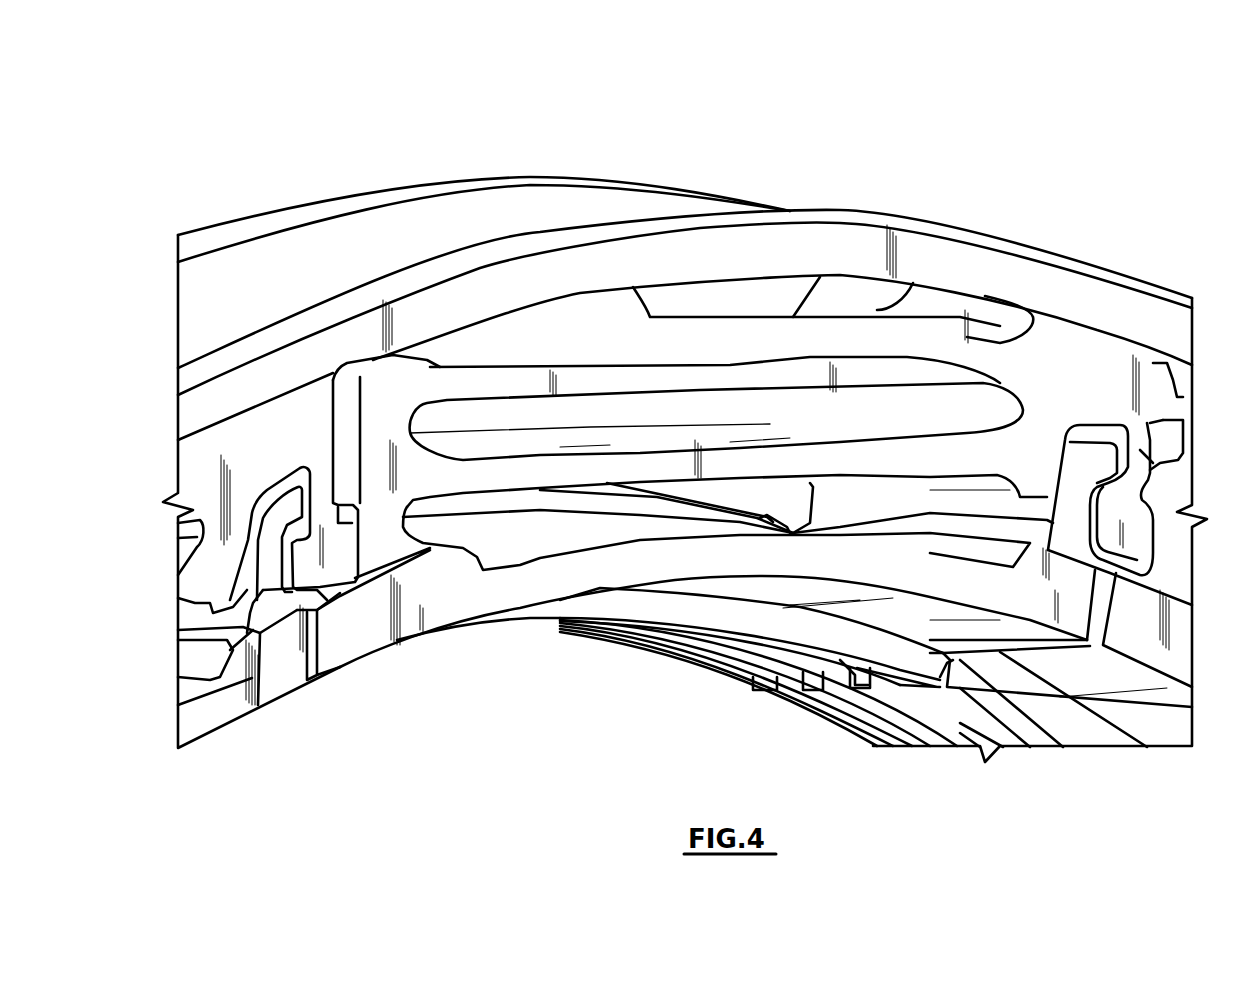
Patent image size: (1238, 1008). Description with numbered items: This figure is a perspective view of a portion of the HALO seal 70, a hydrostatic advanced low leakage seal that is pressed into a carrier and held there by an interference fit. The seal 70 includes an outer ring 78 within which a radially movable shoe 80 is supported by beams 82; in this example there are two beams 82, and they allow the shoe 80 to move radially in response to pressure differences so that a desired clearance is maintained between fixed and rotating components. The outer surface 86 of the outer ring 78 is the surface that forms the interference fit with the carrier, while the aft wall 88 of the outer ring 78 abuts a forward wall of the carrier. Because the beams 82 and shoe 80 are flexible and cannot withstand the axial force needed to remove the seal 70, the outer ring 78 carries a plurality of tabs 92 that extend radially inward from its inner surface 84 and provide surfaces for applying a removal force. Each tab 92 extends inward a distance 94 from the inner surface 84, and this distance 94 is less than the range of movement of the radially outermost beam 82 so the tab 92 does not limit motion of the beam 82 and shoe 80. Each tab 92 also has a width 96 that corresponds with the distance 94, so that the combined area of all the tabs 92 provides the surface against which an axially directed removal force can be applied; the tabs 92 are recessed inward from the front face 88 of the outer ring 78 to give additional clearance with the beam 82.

The HALO seal 70 is at (1100, 130).
The outer ring 78 is at (1093, 265).
The shoe 80 is at (635, 553).
The beams 82 is at (515, 385).
The inner surface 84 is at (873, 290).
The outer surface 86 is at (512, 206).
The aft wall 88 is at (1008, 278).
The tabs 92 is at (747, 297).
The distance 94 is at (607, 319).
The width 96 is at (795, 340).